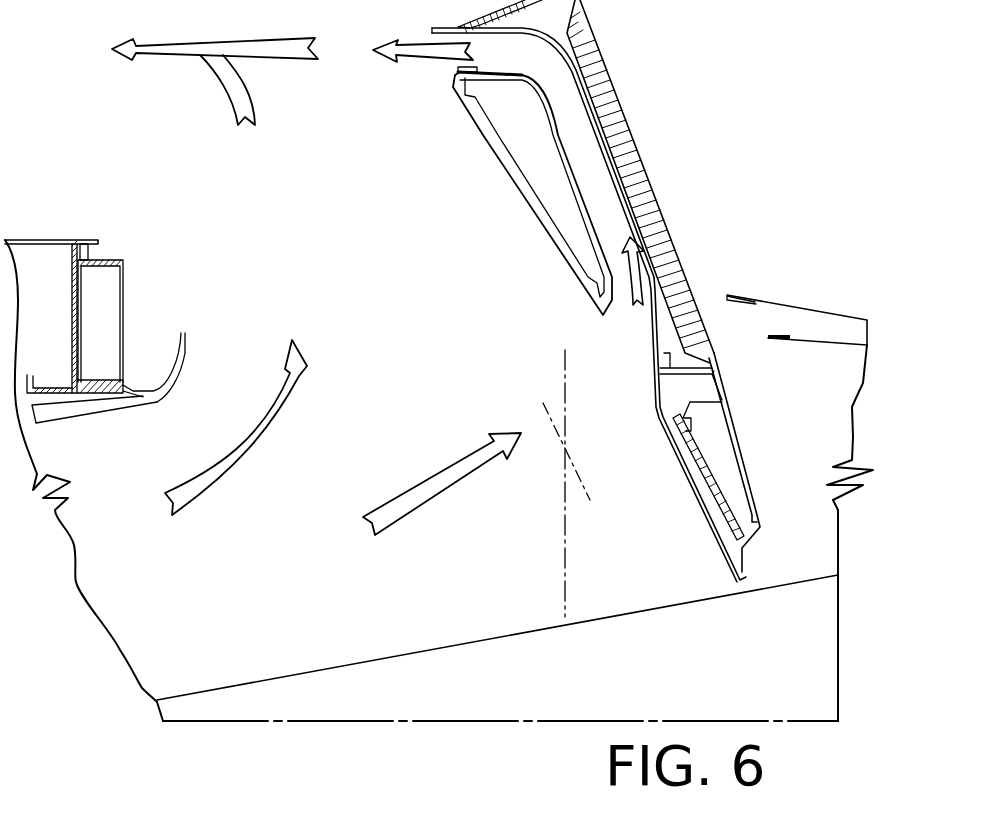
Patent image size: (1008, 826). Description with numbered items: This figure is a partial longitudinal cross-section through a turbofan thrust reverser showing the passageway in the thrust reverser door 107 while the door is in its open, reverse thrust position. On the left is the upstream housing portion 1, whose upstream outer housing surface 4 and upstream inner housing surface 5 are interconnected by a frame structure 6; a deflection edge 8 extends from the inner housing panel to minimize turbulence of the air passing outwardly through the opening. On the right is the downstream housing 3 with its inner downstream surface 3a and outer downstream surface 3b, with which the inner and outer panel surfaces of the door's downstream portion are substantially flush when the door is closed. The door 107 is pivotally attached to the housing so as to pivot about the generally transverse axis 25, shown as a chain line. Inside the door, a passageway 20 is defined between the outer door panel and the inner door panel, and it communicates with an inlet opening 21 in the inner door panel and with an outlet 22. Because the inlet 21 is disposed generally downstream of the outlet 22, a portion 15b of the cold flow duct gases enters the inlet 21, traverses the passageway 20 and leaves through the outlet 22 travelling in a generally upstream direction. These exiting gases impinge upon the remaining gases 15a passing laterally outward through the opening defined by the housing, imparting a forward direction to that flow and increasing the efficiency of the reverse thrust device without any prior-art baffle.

The upstream housing portion 1 is at (80, 230).
The downstream housing 3 is at (797, 328).
The inner downstream surface 3a is at (818, 347).
The outer downstream surface 3b is at (833, 313).
The upstream outer housing surface 4 is at (57, 240).
The upstream inner housing surface 5 is at (77, 407).
The frame structure 6 is at (110, 259).
The deflection edge 8 is at (182, 383).
The gases passing laterally outwardly 15a is at (413, 493).
The portion of the cold flow air duct gases 15b is at (677, 253).
The passageway 20 is at (590, 140).
The inlet opening 21 is at (633, 327).
The outlet 22 is at (458, 68).
The transverse axis 25 is at (565, 447).
The thrust reverser door 107 is at (650, 200).